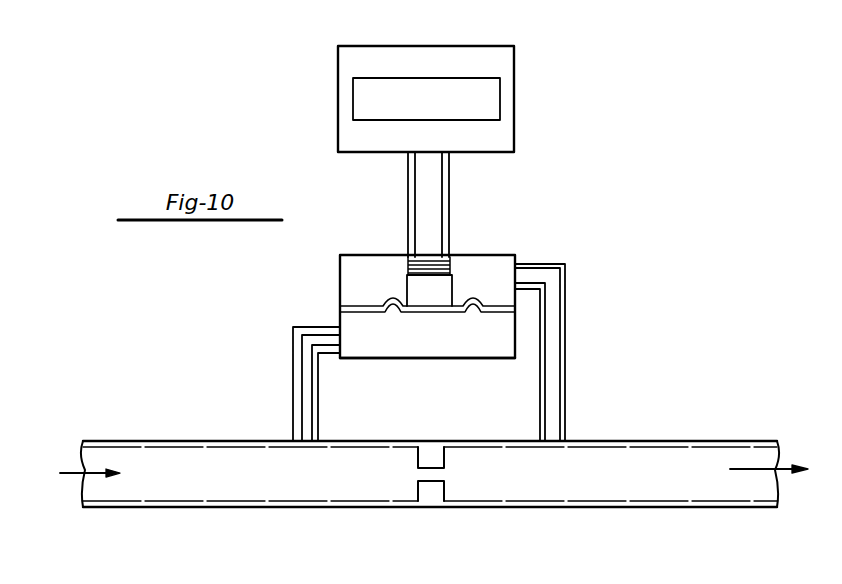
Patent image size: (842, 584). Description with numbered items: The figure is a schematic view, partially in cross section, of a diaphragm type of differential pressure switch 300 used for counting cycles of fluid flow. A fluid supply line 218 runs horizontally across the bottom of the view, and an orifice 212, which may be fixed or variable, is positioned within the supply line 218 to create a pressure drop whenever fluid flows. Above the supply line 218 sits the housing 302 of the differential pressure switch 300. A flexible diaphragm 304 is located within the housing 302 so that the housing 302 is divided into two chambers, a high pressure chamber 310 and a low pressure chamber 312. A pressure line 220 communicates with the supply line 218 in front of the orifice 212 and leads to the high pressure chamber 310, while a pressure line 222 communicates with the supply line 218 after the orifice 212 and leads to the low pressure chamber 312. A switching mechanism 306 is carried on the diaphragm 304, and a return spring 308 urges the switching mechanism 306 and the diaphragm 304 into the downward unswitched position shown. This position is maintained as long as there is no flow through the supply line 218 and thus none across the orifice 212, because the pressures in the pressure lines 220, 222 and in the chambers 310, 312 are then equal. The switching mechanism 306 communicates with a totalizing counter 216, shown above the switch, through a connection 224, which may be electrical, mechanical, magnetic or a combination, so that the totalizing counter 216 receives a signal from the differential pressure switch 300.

The differential pressure switch 300 is at (632, 138).
The totalizing counter 216 is at (447, 114).
The connection 224 is at (426, 178).
The return spring 308 is at (443, 256).
The switching mechanism 306 is at (420, 290).
The flexible diaphragm 304 is at (490, 306).
The low pressure chamber 312 is at (350, 276).
The high pressure chamber 310 is at (447, 350).
The housing 302 is at (362, 360).
The pressure line 222 is at (548, 305).
The pressure line 220 is at (312, 372).
The fluid supply line 218 is at (185, 482).
The orifice 212 is at (426, 495).